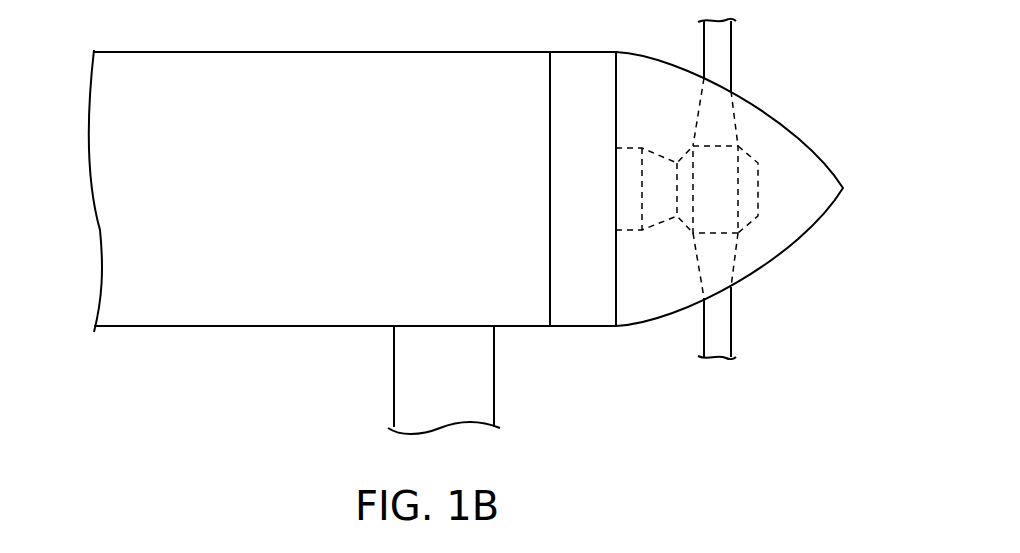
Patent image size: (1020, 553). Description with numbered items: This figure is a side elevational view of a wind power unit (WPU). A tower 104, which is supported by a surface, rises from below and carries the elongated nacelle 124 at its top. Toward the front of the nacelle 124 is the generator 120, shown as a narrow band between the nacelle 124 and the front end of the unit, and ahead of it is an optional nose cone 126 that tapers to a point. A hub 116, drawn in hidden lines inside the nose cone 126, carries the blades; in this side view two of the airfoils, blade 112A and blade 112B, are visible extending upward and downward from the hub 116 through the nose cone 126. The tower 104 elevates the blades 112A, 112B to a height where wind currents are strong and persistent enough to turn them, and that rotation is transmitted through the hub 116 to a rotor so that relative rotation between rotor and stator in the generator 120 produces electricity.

The tower 104 is at (393, 373).
The blade 112A is at (731, 32).
The blade 112B is at (703, 340).
The hub 116 is at (743, 148).
The generator 120 is at (577, 52).
The nacelle 124 is at (222, 52).
The nose cone 126 is at (824, 162).